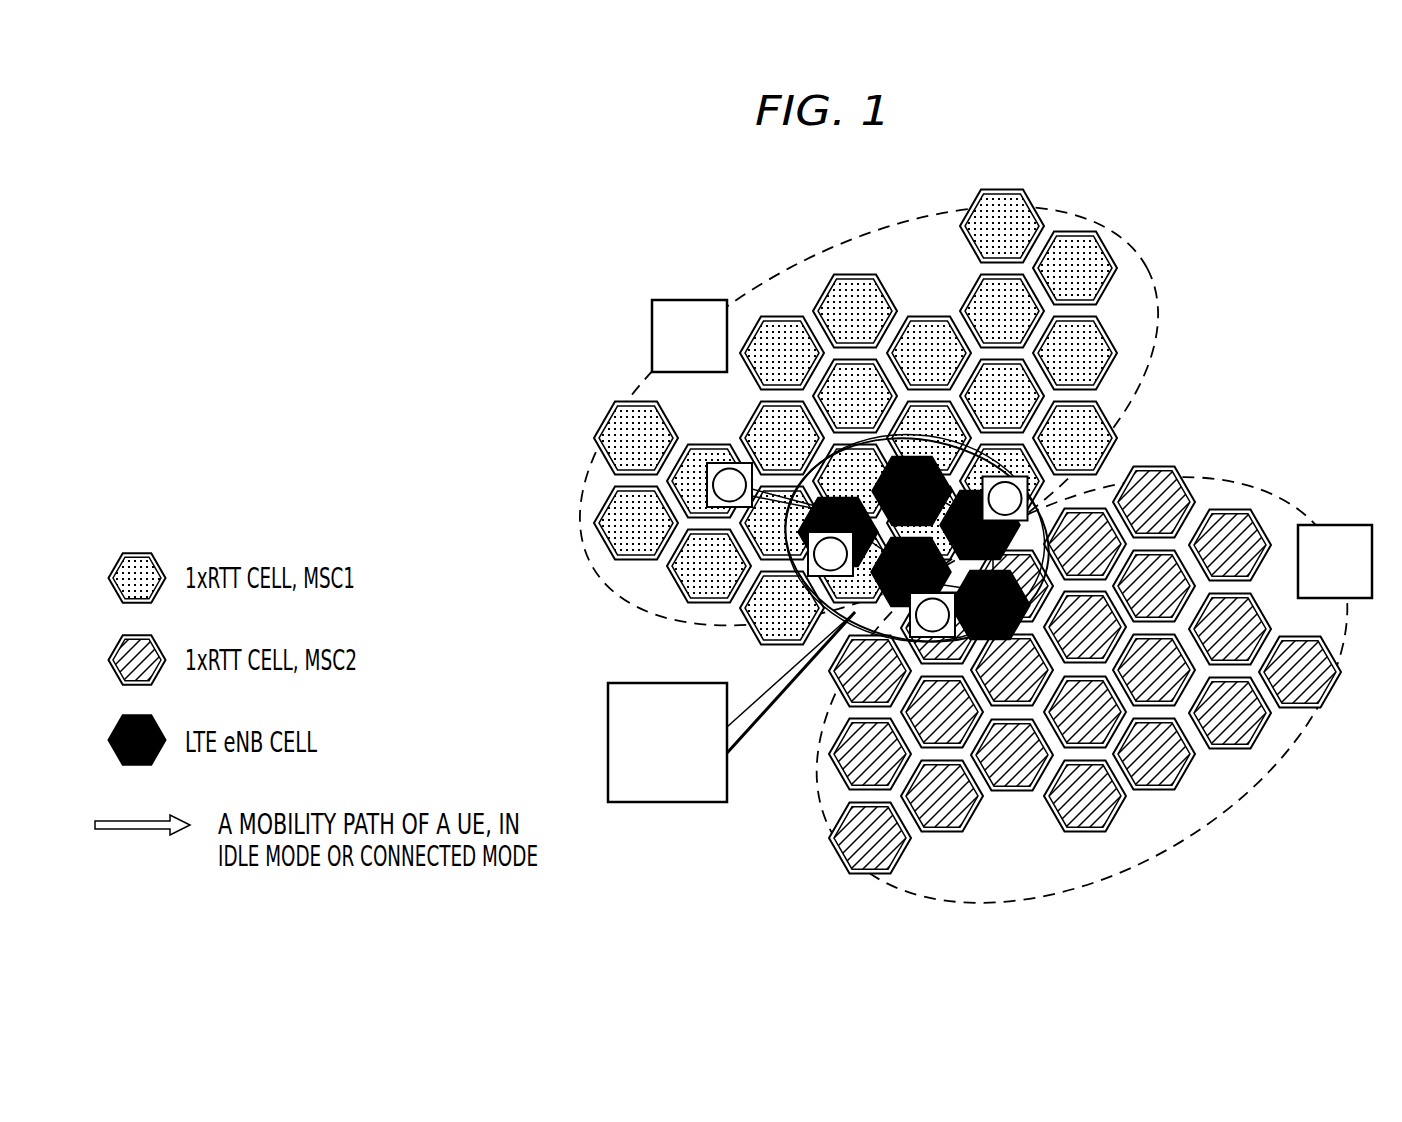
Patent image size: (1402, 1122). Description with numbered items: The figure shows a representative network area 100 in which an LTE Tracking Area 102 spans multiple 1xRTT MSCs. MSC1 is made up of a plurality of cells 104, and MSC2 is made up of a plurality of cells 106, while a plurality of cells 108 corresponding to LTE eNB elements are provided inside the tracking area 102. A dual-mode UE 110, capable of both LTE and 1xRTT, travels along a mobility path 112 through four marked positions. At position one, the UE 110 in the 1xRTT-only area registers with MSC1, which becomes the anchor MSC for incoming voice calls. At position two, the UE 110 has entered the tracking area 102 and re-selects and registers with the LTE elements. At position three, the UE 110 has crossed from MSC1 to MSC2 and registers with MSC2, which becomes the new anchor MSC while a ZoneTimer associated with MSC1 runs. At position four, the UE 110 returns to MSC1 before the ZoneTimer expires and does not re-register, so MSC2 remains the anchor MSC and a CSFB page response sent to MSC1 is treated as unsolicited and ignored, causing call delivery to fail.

The network area 100 is at (567, 312).
The tracking area 102 is at (607, 746).
The cells 104 is at (1160, 291).
The cells 106 is at (1193, 838).
The cells 108 is at (1027, 520).
The dual-mode UE 110 is at (707, 485).
The mobility path 112 is at (775, 497).